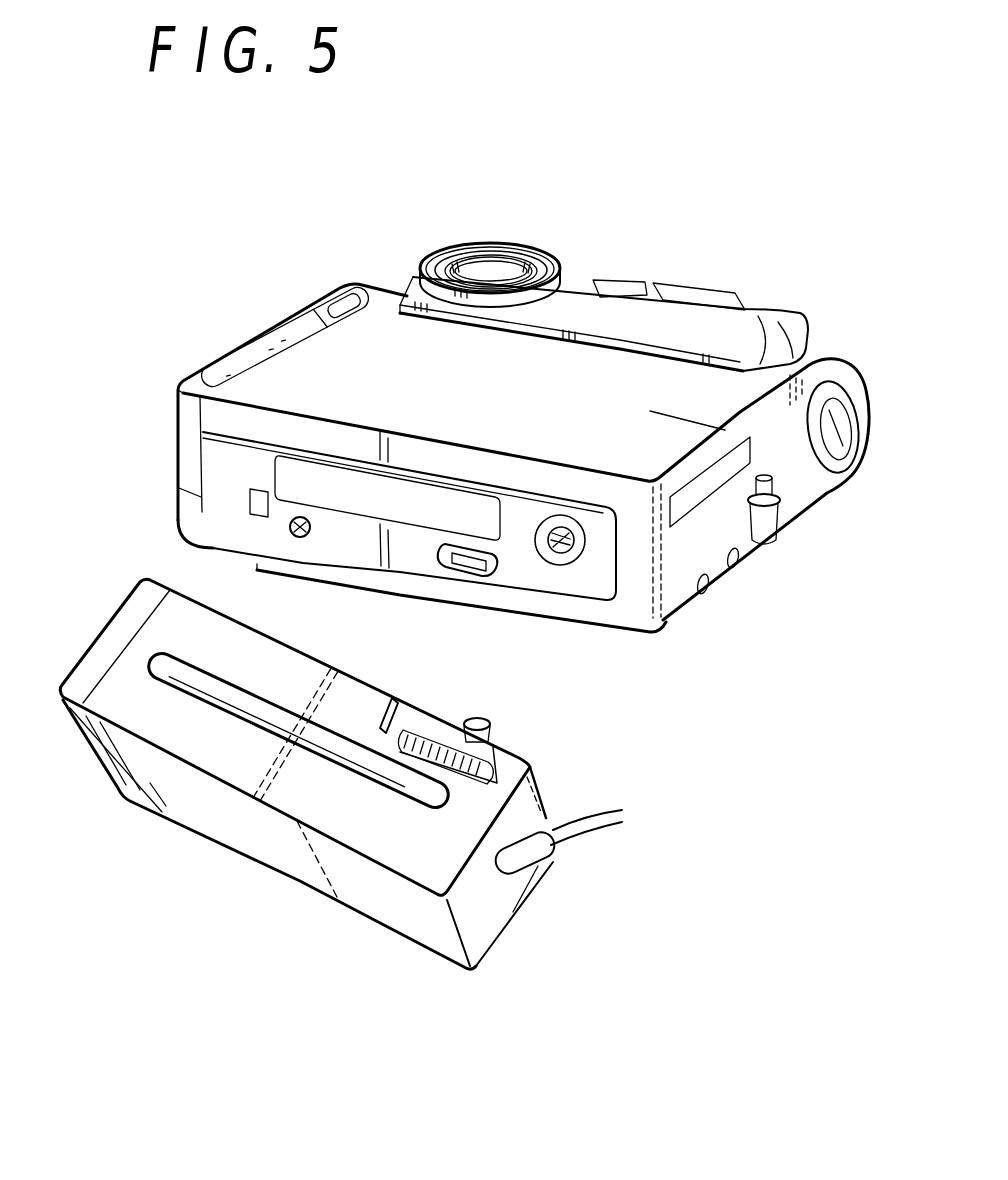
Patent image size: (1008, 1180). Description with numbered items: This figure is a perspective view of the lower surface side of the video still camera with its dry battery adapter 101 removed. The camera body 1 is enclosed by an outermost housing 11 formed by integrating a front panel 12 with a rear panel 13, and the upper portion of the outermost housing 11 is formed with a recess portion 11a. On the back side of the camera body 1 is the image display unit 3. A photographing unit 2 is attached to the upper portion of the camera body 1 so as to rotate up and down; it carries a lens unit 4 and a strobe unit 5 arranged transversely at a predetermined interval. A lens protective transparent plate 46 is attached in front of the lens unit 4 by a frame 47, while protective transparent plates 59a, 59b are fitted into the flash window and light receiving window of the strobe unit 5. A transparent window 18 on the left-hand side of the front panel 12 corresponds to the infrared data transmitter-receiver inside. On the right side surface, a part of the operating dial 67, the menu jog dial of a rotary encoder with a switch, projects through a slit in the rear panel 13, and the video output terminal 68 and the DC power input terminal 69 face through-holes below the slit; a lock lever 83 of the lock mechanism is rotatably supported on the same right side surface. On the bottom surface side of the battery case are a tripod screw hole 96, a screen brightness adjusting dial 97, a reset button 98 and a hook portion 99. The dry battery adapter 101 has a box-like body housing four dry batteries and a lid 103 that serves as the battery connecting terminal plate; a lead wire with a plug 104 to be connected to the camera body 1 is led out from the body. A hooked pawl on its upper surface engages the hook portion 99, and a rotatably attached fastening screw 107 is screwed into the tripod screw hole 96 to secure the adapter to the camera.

The camera body 1 is at (376, 278).
The photographing unit 2 is at (622, 264).
The image display unit 3 is at (632, 636).
The lens unit 4 is at (480, 268).
The lens protective transparent plate 46 is at (458, 270).
The frame 47 is at (537, 253).
The strobe unit 5 is at (684, 257).
The protective transparent plate 59a is at (693, 297).
The protective transparent plate 59b is at (627, 283).
The outermost housing 11 is at (798, 494).
The recess portion 11a is at (790, 310).
The front panel 12 is at (443, 327).
The rear panel 13 is at (351, 563).
The transparent window 18 is at (338, 302).
The operating dial 67 is at (780, 502).
The video output terminal 68 is at (737, 563).
The DC power input terminal 69 is at (708, 590).
The lock lever 83 is at (850, 412).
The tripod screw hole 96 is at (560, 552).
The screen brightness adjusting dial 97 is at (460, 562).
The reset button 98 is at (300, 537).
The hook portion 99 is at (249, 507).
The dry battery adapter 101 is at (318, 778).
The lid 103 is at (97, 650).
The plug 104 is at (590, 827).
The fastening screw 107 is at (492, 727).